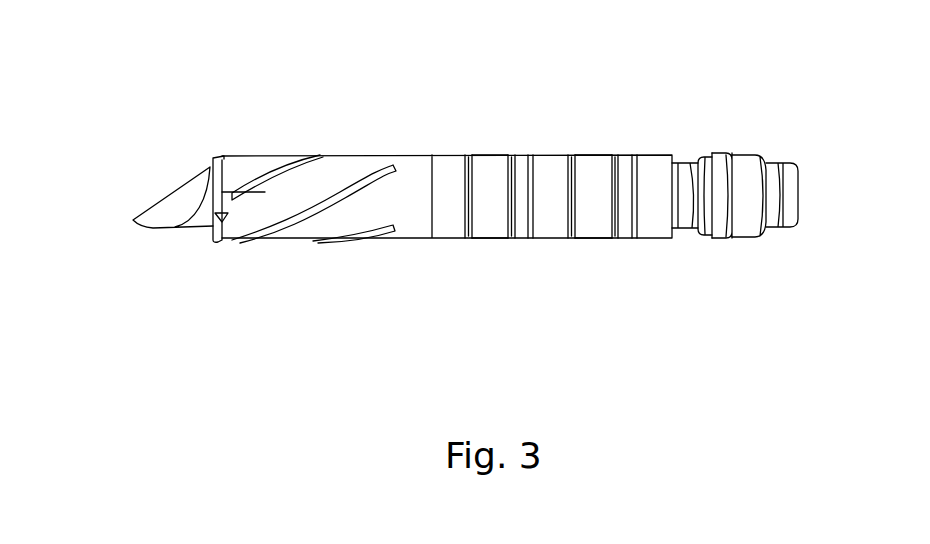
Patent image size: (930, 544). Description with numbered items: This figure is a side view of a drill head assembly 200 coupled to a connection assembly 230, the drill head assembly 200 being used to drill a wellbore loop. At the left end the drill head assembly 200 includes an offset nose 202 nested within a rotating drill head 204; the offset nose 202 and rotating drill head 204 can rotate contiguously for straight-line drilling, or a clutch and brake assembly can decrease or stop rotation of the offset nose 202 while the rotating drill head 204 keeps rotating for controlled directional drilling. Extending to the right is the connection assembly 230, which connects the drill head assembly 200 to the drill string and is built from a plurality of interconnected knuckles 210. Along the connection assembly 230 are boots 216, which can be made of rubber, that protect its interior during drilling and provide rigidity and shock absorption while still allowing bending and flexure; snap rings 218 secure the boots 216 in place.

The drill head assembly 200 is at (226, 301).
The offset nose 202 is at (135, 226).
The rotating drill head 204 is at (313, 240).
The knuckles 210 is at (506, 354).
The boots 216 is at (491, 238).
The snap rings 218 is at (468, 155).
The connection assembly 230 is at (707, 372).